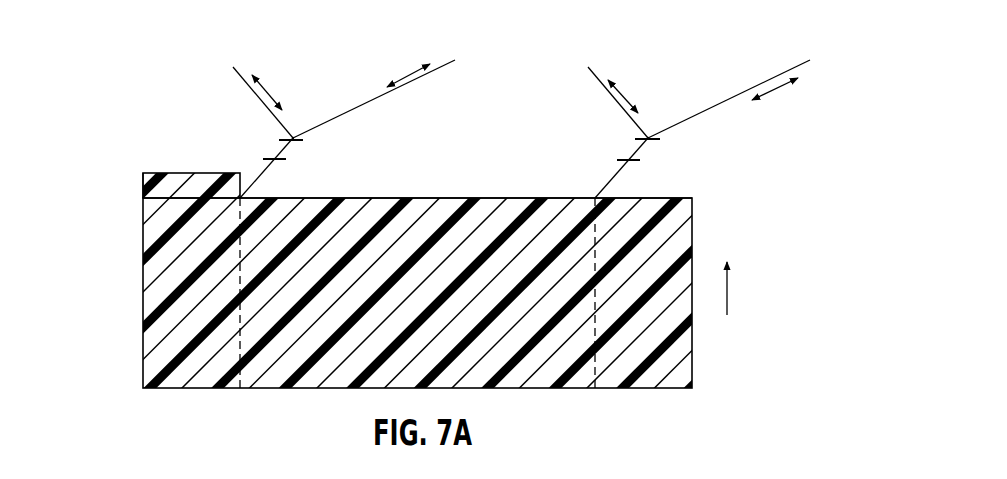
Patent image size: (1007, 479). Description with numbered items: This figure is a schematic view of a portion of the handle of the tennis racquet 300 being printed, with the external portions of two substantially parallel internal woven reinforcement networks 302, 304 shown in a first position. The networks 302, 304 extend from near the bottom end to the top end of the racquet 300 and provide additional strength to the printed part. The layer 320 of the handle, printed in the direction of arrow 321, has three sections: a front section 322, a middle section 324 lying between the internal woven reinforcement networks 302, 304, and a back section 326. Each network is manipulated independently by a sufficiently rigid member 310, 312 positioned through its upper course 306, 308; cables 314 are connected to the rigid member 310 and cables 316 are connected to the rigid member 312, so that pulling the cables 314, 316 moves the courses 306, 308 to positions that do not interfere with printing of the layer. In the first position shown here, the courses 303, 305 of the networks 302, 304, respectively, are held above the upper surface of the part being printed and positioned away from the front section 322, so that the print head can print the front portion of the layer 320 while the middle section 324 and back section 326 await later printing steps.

The tennis racquet 300 is at (142, 305).
The internal woven reinforcement network 302 is at (260, 186).
The course 303 is at (278, 164).
The internal woven reinforcement network 304 is at (612, 177).
The course 305 is at (632, 167).
The upper course 306 is at (281, 150).
The upper course 308 is at (636, 142).
The sufficiently rigid member 310 is at (296, 137).
The sufficiently rigid member 312 is at (650, 137).
The cables 314 is at (235, 67).
The cables 316 is at (366, 86).
The layer 320 is at (122, 185).
The arrow 321 is at (730, 284).
The front section 322 is at (240, 172).
The middle section 324 is at (452, 197).
The back section 326 is at (668, 197).